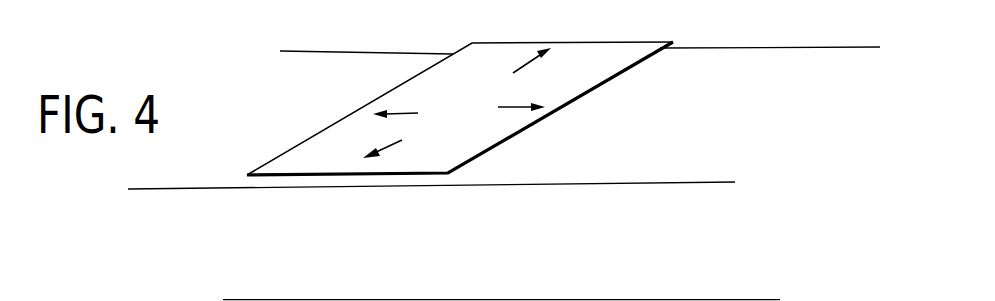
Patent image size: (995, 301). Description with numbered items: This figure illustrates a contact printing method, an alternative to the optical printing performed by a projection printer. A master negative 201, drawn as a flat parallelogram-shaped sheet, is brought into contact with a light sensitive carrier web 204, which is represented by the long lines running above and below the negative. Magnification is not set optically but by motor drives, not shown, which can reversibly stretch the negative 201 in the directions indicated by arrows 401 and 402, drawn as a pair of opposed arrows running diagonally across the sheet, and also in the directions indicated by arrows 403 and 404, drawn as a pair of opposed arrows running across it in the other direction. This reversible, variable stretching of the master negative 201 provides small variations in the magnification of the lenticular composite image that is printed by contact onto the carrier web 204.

The master negative 201 is at (298, 176).
The light sensitive carrier web 204 is at (767, 48).
The arrow 401 is at (562, 48).
The arrow 402 is at (374, 160).
The arrow 403 is at (375, 103).
The arrow 404 is at (533, 112).